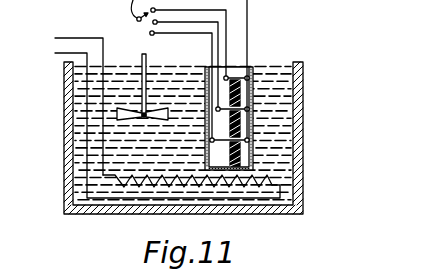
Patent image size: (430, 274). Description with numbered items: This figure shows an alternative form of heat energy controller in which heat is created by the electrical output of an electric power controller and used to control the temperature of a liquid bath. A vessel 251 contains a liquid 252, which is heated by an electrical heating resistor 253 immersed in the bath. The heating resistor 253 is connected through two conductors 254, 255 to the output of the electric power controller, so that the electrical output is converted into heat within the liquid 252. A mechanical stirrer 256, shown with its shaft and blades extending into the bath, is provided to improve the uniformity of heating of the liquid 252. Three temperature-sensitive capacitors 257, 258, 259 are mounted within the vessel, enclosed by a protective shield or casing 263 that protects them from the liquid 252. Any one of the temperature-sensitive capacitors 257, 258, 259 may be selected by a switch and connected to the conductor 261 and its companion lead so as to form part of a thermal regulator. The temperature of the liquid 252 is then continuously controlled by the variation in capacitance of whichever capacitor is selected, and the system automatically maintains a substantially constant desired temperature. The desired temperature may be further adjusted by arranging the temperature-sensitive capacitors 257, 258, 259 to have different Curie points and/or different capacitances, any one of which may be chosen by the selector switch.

The vessel 251 is at (282, 218).
The liquid 252 is at (283, 80).
The electrical heating resistor 253 is at (124, 183).
The conductor 254 is at (55, 38).
The conductor 255 is at (55, 53).
The mechanical stirrer 256 is at (147, 57).
The temperature-sensitive capacitor 257 is at (240, 88).
The temperature-sensitive capacitor 258 is at (240, 118).
The temperature-sensitive capacitor 259 is at (240, 152).
The conductor 261 is at (136, 18).
The protective shield or casing 263 is at (205, 127).